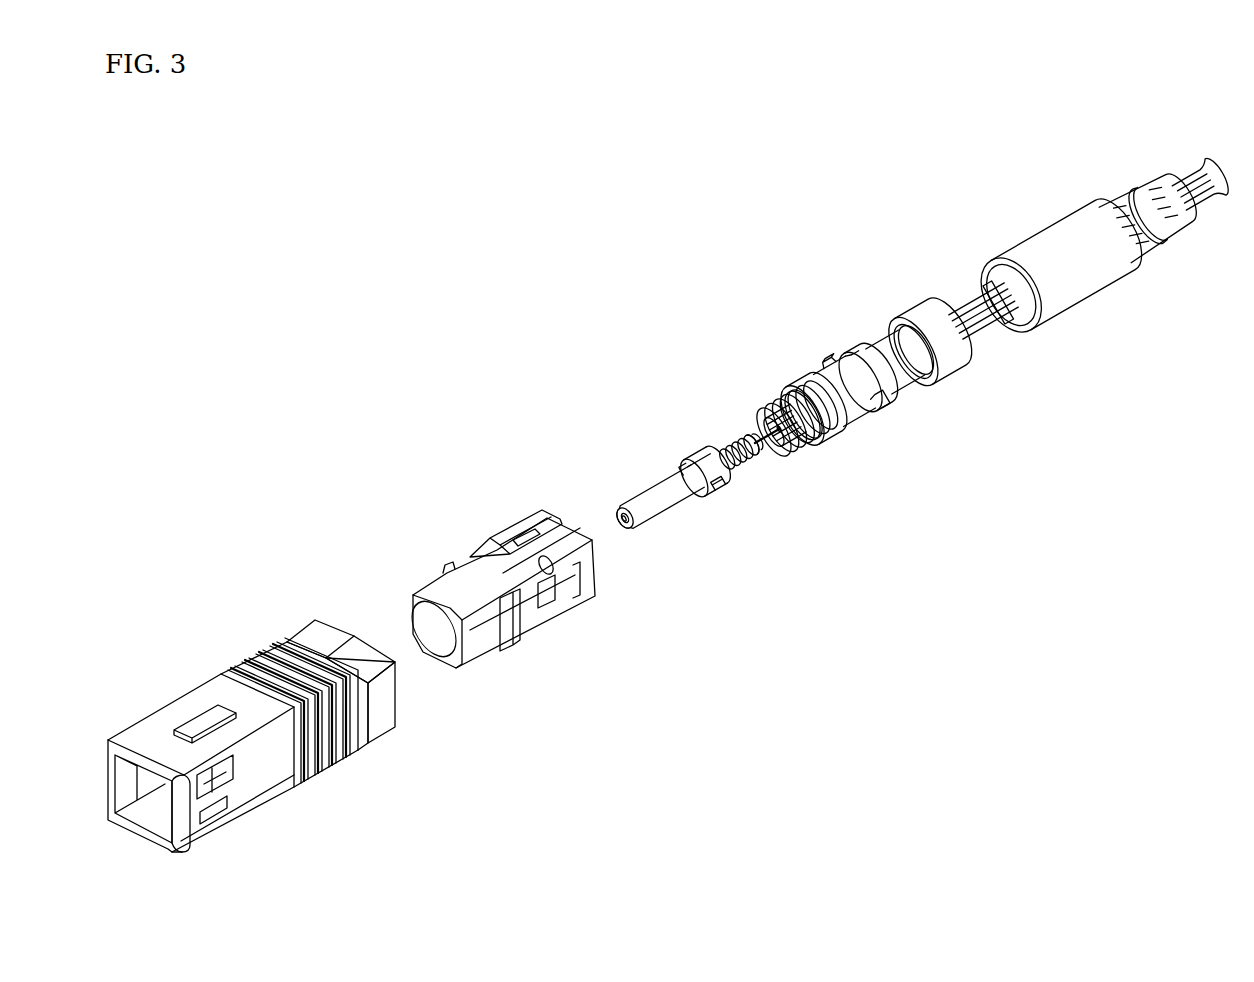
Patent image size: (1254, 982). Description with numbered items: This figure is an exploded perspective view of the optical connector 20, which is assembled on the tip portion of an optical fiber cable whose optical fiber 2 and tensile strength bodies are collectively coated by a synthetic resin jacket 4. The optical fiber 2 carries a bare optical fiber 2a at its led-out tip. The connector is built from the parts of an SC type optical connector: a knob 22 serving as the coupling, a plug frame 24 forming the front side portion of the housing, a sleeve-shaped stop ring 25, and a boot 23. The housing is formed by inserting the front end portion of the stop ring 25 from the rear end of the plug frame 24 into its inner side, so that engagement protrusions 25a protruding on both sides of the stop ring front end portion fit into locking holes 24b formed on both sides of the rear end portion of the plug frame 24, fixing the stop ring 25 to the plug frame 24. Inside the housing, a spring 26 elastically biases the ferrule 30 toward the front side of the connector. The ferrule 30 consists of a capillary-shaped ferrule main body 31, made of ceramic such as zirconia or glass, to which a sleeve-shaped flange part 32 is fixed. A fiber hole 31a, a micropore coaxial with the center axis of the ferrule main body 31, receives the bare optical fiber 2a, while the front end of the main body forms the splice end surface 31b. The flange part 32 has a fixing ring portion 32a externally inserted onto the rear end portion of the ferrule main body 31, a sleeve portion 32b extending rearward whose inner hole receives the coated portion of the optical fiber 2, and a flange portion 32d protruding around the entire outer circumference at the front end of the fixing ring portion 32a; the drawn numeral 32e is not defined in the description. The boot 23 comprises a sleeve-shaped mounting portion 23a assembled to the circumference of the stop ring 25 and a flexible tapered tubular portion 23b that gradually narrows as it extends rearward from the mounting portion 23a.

The optical fiber 2 is at (772, 452).
The bare optical fiber 2a is at (624, 518).
The jacket 4 is at (1178, 180).
The optical connector 20 is at (848, 545).
The knob 22 is at (390, 738).
The boot 23 is at (1087, 289).
The mounting portion 23a is at (1120, 283).
The tapered tubular portion 23b is at (1083, 306).
The plug frame 24 is at (521, 585).
The locking holes 24b is at (535, 537).
The stop ring 25 is at (868, 382).
The engagement protrusions 25a is at (826, 358).
The spring 26 is at (794, 455).
The ferrule 30 is at (678, 475).
The ferrule main body 31 is at (633, 534).
The fiber hole 31a is at (620, 516).
The splice end surface 31b is at (650, 513).
The flange part 32 is at (701, 448).
The fixing ring portion 32a is at (726, 477).
The sleeve portion 32b is at (754, 466).
The flange portion 32d is at (699, 453).
The spring end 32e is at (742, 421).